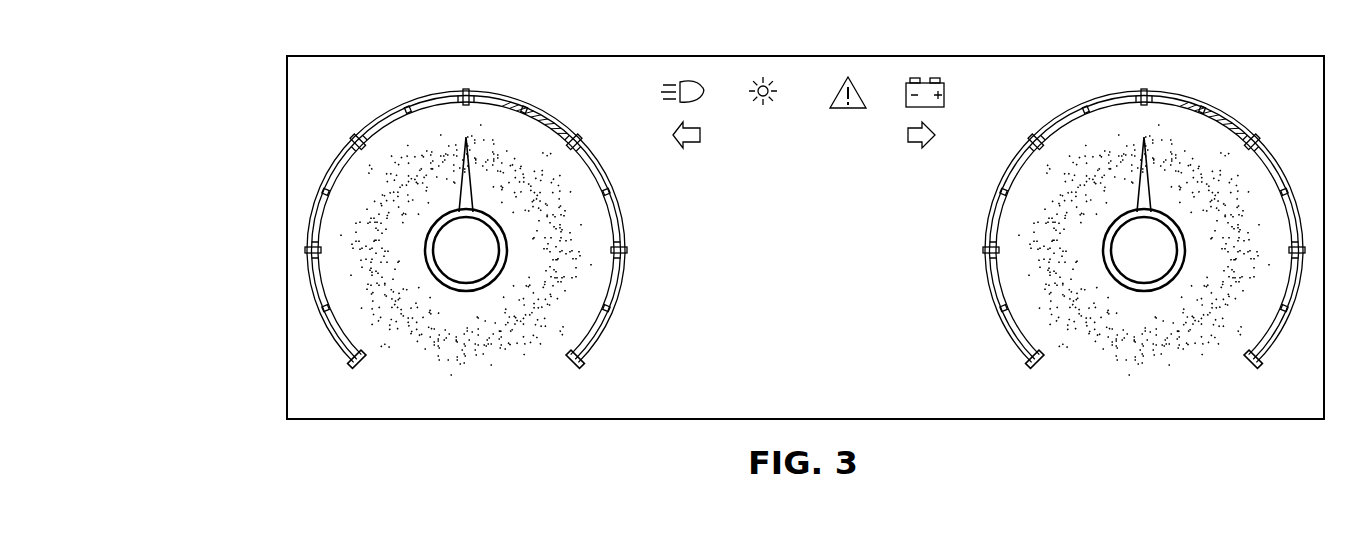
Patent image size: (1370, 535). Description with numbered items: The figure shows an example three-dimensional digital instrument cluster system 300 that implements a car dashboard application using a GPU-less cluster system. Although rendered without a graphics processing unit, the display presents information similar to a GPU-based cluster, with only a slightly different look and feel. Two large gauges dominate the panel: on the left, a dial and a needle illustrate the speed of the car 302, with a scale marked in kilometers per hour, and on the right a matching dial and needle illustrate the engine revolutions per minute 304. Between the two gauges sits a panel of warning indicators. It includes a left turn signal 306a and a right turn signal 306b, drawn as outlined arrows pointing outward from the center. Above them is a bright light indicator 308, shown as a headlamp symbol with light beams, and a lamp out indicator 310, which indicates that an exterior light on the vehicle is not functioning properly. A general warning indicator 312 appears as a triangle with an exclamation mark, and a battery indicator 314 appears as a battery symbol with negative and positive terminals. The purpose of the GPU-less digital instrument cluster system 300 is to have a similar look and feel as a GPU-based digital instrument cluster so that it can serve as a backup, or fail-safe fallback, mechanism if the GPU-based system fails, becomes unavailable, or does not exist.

The 3D digital instrument cluster system 300 is at (263, 225).
The speed of the car 302 is at (626, 262).
The engine revolutions per minute 304 is at (986, 262).
The left turn signal 306a is at (690, 148).
The right turn signal 306b is at (918, 148).
The bright light indicator 308 is at (678, 112).
The lamp out indicator 310 is at (761, 108).
The general warning indicator 312 is at (848, 108).
The battery indicator 314 is at (945, 92).